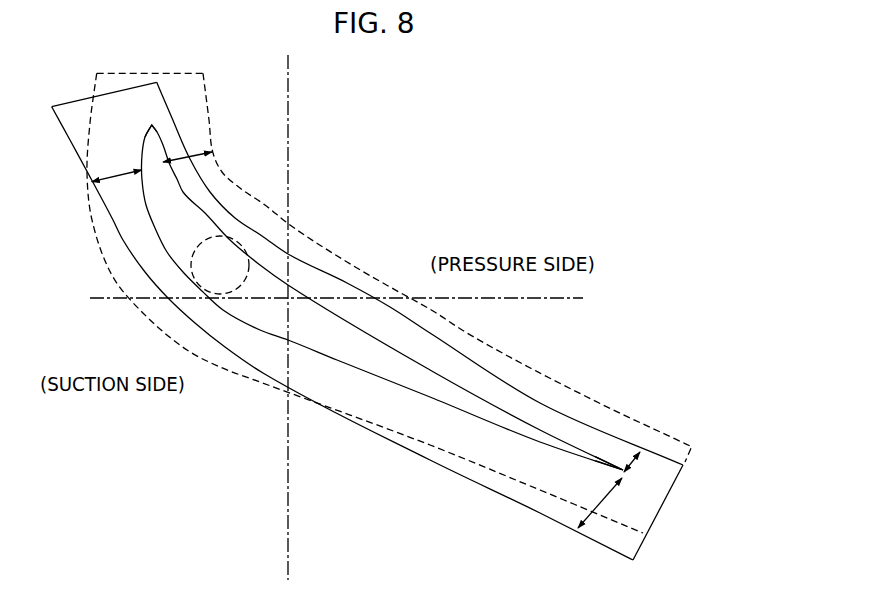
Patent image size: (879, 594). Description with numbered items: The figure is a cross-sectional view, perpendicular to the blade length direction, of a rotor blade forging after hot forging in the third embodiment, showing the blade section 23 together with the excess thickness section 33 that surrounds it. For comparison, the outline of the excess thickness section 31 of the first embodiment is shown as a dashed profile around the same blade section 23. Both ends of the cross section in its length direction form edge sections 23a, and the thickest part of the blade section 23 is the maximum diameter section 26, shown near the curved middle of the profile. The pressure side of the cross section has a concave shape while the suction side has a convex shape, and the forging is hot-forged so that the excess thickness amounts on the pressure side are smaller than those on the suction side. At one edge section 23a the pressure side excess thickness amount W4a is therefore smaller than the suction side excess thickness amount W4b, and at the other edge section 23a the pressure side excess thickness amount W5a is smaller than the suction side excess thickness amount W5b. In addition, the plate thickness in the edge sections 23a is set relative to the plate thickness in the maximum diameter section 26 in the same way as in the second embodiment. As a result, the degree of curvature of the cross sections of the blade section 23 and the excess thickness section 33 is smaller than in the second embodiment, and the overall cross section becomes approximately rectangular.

The blade section 23 is at (455, 393).
The edge section 23a is at (155, 132).
The maximum diameter section 26 is at (223, 296).
The excess thickness section 31 is at (327, 262).
The excess thickness section 33 is at (368, 320).
The excess thickness amount of the pressure side W4a is at (173, 160).
The excess thickness amount of the suction side W4b is at (118, 173).
The excess thickness amount of the pressure side W5a is at (640, 457).
The excess thickness amount of the suction side W5b is at (605, 500).